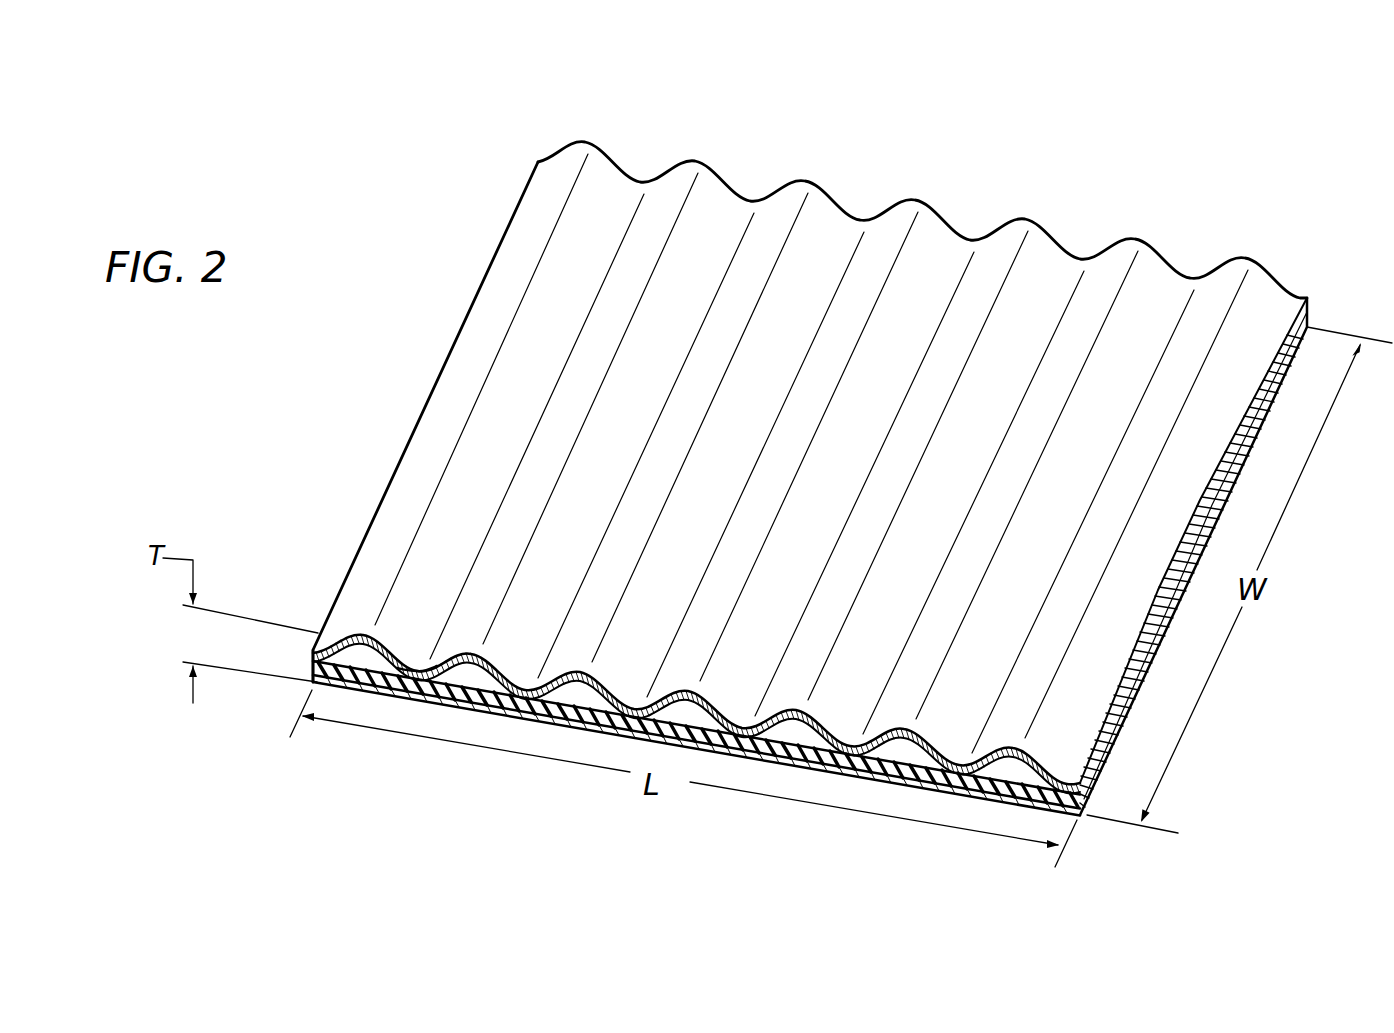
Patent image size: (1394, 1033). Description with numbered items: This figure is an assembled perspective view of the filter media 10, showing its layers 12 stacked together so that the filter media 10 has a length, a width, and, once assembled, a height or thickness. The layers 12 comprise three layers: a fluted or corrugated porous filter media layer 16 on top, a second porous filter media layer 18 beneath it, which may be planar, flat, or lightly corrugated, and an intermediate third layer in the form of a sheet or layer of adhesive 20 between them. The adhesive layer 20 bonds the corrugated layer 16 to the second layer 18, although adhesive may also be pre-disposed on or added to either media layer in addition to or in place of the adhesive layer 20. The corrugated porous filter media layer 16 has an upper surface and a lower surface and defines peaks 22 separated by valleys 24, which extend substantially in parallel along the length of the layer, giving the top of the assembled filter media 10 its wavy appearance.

The filter media 10 is at (461, 118).
The layers 12 is at (303, 667).
The corrugated porous filter media layer 16 is at (320, 650).
The second porous filter media layer 18 is at (347, 682).
The adhesive layer 20 is at (393, 686).
The peaks 22 is at (368, 636).
The valleys 24 is at (427, 677).